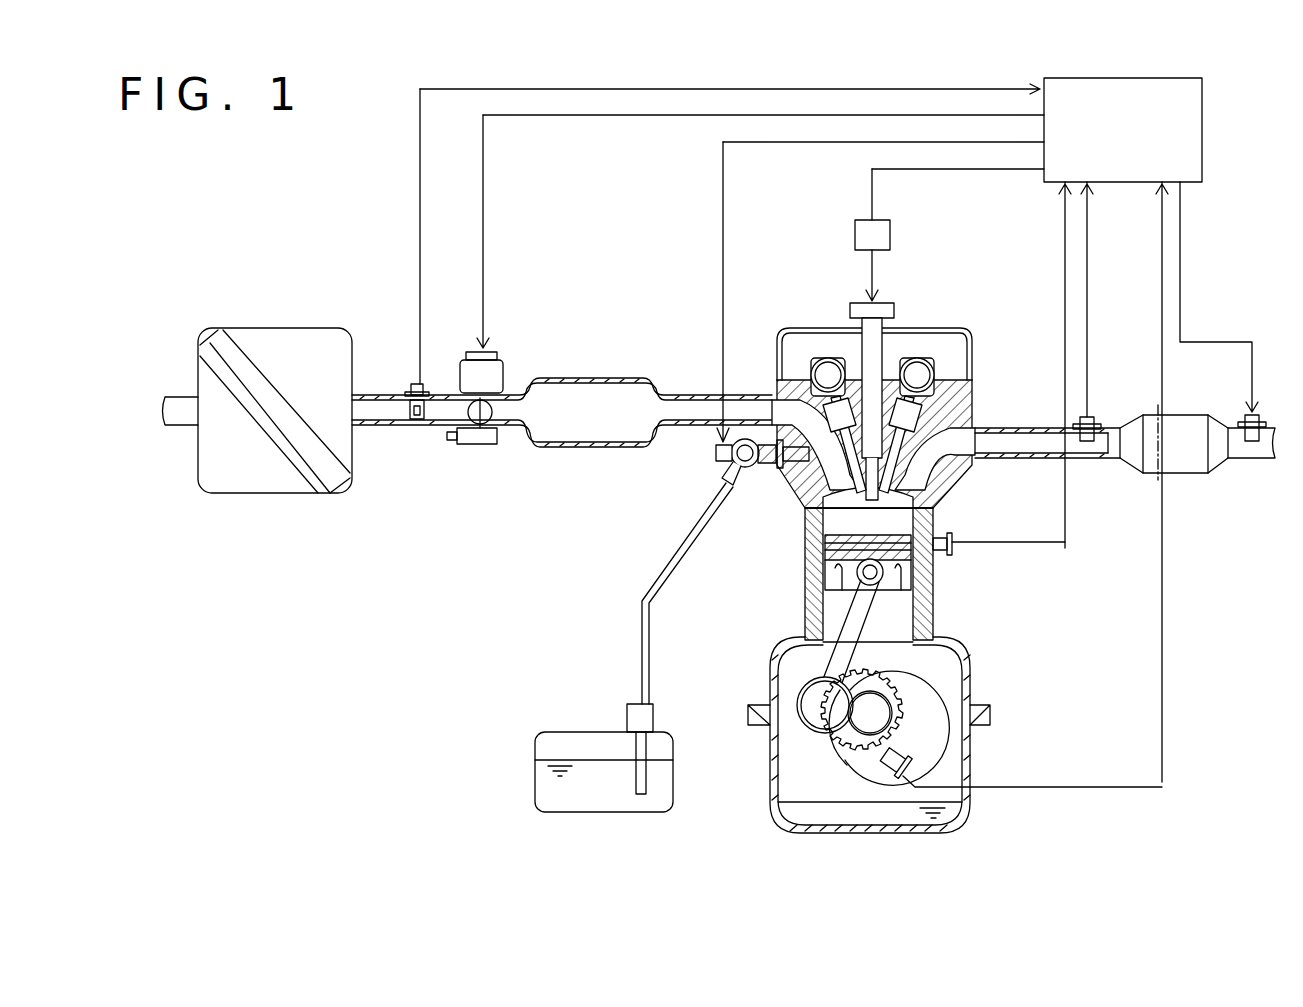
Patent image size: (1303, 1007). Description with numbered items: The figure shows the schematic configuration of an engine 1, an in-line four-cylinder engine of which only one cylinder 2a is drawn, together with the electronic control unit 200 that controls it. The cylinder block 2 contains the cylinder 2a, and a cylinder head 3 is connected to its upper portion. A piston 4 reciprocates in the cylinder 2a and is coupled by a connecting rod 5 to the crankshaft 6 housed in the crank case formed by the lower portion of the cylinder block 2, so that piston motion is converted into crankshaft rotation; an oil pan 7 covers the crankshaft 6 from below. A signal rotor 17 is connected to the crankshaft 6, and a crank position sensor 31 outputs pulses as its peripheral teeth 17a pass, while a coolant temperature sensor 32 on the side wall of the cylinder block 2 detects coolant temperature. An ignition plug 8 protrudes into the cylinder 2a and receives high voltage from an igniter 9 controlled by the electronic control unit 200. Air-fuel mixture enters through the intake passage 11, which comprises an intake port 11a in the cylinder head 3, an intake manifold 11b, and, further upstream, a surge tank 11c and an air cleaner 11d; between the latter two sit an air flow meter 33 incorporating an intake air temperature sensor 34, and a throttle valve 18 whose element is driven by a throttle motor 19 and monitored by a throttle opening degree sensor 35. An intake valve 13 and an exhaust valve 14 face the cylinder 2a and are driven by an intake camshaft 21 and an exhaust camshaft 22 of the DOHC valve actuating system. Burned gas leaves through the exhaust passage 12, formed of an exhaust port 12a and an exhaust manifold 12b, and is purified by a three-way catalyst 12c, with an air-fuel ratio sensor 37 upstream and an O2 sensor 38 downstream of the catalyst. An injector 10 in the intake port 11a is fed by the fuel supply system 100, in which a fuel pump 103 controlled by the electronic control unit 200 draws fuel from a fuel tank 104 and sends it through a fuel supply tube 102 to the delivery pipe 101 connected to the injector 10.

The engine 1 is at (1050, 593).
The cylinder block 2 is at (852, 575).
The cylinder 2a is at (815, 545).
The cylinder head 3 is at (854, 358).
The piston 4 is at (822, 566).
The connecting rod 5 is at (822, 605).
The crankshaft 6 is at (860, 713).
The oil pan 7 is at (962, 825).
The ignition plug 8 is at (845, 498).
The igniter 9 is at (892, 236).
The injector 10 is at (790, 470).
The intake passage 11 is at (688, 432).
The intake port 11a is at (745, 394).
The intake manifold 11b is at (712, 388).
The surge tank 11c is at (598, 450).
The air cleaner 11d is at (286, 309).
The exhaust passage 12 is at (1125, 453).
The exhaust port 12a is at (980, 428).
The exhaust manifold 12b is at (1020, 458).
The three-way catalyst 12c is at (1185, 478).
The intake valve 13 is at (800, 498).
The exhaust valve 14 is at (930, 478).
The signal rotor 17 is at (909, 666).
The teeth 17a is at (930, 705).
The throttle valve 18 is at (494, 420).
The throttle motor 19 is at (502, 375).
The intake camshaft 21 is at (836, 330).
The exhaust camshaft 22 is at (921, 330).
The crank position sensor 31 is at (922, 770).
The coolant temperature sensor 32 is at (948, 552).
The air flow meter 33 is at (408, 380).
The intake air temperature sensor 34 is at (428, 404).
The throttle opening degree sensor 35 is at (474, 444).
The air-fuel ratio sensor 37 is at (1094, 420).
The O2 sensor 38 is at (1260, 420).
The fuel supply system 100 is at (627, 477).
The delivery pipe 101 is at (722, 490).
The fuel supply tube 102 is at (660, 565).
The fuel pump 103 is at (632, 712).
The fuel tank 104 is at (535, 775).
The electronic control unit 200 is at (1204, 104).